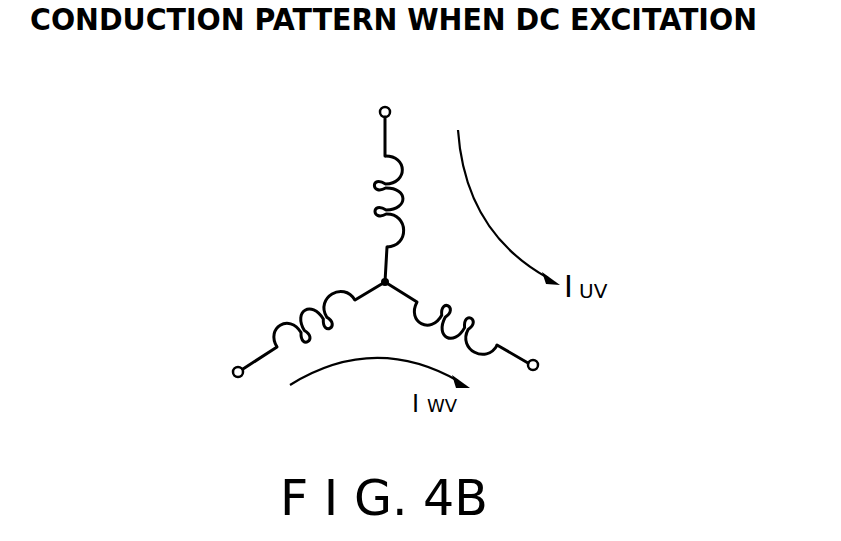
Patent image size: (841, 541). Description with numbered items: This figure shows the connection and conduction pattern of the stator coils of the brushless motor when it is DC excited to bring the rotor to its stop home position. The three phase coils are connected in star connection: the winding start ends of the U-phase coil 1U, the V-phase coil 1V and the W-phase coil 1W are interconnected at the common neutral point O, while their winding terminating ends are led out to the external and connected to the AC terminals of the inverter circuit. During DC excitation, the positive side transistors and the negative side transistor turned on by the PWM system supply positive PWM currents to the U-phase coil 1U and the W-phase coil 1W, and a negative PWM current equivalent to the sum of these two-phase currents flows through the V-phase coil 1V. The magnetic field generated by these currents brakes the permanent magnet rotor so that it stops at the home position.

The U-phase coil 1U is at (372, 202).
The V-phase coil 1V is at (459, 322).
The W-phase coil 1W is at (311, 306).
The neutral point O is at (388, 280).